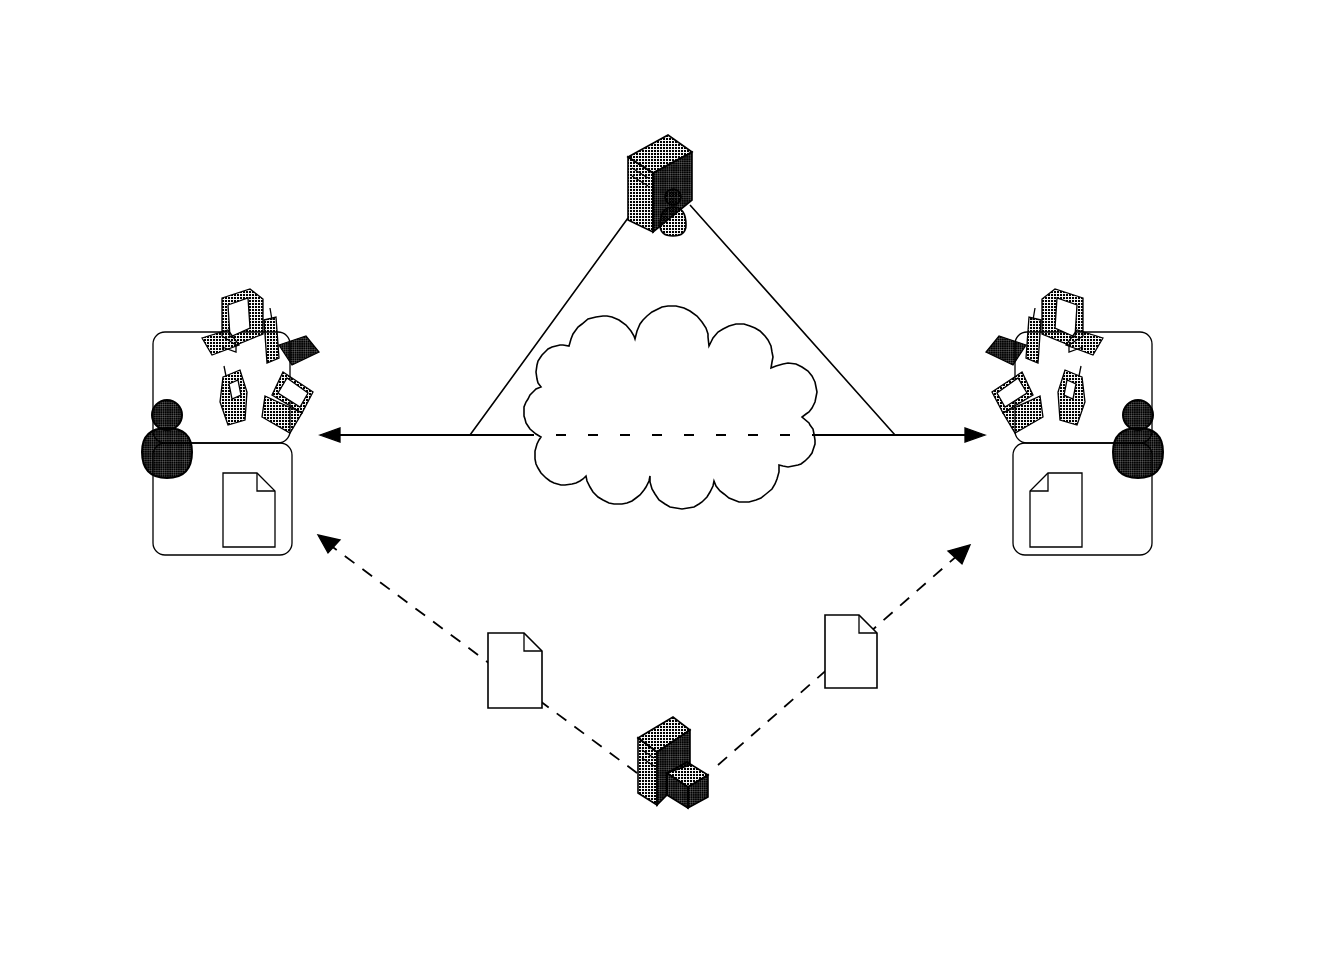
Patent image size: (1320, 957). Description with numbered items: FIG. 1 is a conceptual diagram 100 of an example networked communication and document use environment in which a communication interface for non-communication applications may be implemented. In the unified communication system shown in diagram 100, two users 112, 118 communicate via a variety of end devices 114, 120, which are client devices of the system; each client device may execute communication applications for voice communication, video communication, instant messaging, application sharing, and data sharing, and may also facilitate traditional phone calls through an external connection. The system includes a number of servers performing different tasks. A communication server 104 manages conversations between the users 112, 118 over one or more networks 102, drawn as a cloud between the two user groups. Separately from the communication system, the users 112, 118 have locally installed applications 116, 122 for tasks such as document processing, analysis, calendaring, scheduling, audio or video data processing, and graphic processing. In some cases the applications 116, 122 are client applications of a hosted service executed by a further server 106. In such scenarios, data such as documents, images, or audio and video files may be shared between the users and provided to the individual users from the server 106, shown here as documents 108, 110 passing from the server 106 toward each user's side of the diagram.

The diagram 100 is at (1145, 83).
The networks 102 is at (588, 508).
The communication server 104 is at (698, 160).
The server 106 is at (690, 708).
The document 108 is at (537, 635).
The document 110 is at (840, 607).
The user 112 is at (150, 407).
The end device 114 is at (310, 327).
The application 116 is at (298, 497).
The user 118 is at (1162, 420).
The end device 120 is at (1118, 323).
The application 122 is at (1165, 497).